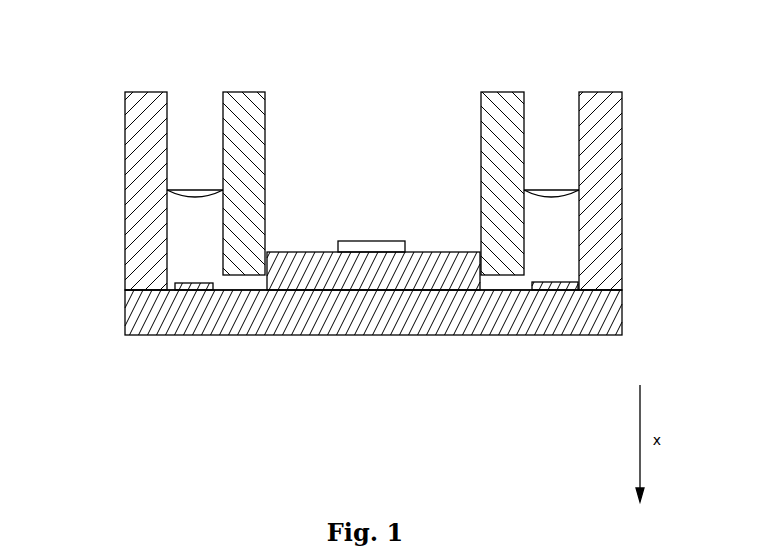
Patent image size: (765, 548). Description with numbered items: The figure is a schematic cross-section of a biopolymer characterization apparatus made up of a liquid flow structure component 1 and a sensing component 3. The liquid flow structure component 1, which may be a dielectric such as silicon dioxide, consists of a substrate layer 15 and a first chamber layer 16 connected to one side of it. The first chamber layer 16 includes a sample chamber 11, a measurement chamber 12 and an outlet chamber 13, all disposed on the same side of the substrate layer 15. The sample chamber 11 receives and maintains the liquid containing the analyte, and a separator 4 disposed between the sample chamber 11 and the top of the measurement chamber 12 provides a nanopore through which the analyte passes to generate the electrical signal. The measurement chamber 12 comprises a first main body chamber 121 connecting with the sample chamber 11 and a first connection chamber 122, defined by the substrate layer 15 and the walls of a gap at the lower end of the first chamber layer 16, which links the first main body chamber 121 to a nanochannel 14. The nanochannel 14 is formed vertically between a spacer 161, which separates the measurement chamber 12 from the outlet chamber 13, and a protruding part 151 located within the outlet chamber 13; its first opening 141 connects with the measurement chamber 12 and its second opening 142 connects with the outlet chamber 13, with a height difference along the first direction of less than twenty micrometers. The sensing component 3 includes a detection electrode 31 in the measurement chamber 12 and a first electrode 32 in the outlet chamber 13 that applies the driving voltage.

The liquid flow structure component 1 is at (63, 175).
The sensing component 3 is at (170, 405).
The separator 4 is at (218, 190).
The sample chamber 11 is at (582, 134).
The measurement chamber 12 is at (675, 213).
The outlet chamber 13 is at (378, 101).
The nanochannel 14 is at (425, 372).
The substrate layer 15 is at (109, 292).
The first chamber layer 16 is at (109, 92).
The detection electrode 31 is at (188, 289).
The first electrode 32 is at (372, 250).
The first main body chamber 121 is at (582, 238).
The first connection chamber 122 is at (522, 290).
The first opening 141 is at (485, 296).
The second opening 142 is at (470, 273).
The protruding part 151 is at (387, 275).
The spacer 161 is at (503, 118).